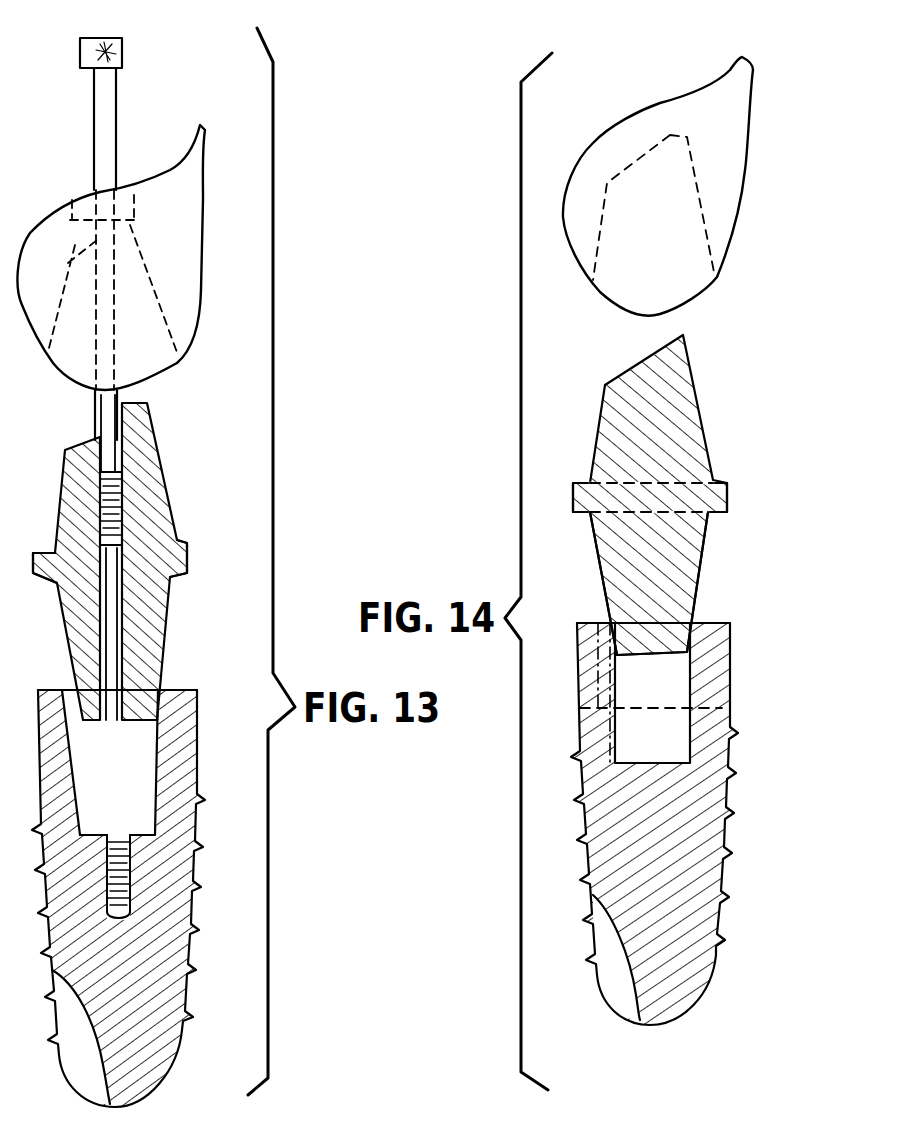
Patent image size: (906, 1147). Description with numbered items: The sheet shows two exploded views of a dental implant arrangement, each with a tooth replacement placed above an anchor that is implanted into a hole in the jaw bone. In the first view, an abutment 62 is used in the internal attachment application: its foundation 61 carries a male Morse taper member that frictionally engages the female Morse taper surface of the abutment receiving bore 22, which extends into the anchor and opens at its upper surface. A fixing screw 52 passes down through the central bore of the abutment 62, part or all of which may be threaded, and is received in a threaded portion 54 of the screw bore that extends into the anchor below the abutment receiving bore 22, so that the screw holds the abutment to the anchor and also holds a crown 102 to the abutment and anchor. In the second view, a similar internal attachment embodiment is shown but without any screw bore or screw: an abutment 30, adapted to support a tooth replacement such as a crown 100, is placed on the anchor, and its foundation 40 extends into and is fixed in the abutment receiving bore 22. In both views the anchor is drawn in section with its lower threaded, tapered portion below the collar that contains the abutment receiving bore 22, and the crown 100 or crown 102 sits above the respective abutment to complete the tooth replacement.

In FIG. 13, the abutment receiving bore 22 is at (172, 738).
In FIG. 14, the abutment receiving bore 22 is at (700, 683).
In FIG. 14, the abutment 30 is at (712, 427).
In FIG. 14, the foundation 40 is at (700, 545).
In FIG. 13, the fixing screw 52 is at (113, 85).
In FIG. 13, the threaded portion 54 is at (120, 840).
In FIG. 13, the foundation 61 is at (172, 596).
In FIG. 13, the abutment 62 is at (170, 488).
In FIG. 14, the crown 100 is at (767, 106).
In FIG. 13, the crown 102 is at (200, 153).